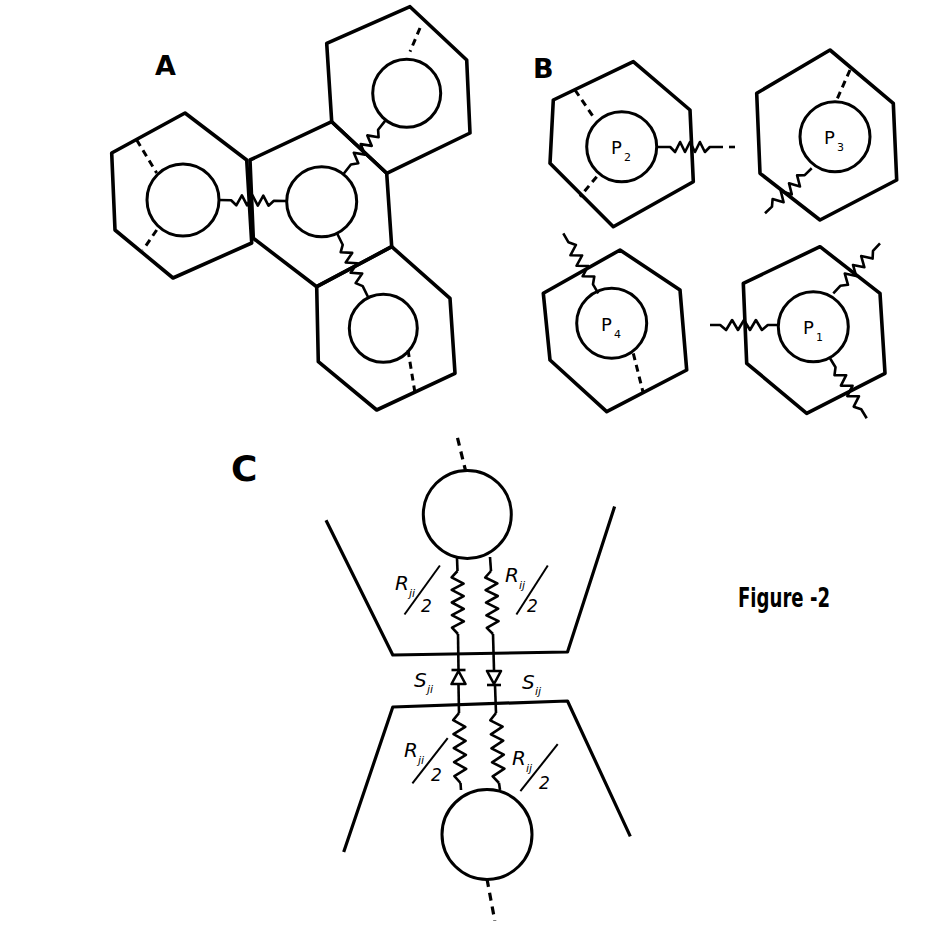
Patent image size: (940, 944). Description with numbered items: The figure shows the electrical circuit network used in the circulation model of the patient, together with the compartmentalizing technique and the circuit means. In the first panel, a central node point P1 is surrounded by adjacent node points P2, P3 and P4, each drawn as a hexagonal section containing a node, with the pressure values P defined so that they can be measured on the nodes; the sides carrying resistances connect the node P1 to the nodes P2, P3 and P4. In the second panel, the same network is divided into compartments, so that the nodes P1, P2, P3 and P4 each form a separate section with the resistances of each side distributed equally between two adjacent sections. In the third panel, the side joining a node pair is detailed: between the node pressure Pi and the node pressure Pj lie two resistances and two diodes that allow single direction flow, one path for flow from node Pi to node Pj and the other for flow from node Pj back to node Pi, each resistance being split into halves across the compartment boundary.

The pressure node point P1 is at (321, 204).
The pressure node point P2 is at (182, 195).
The pressure node point P3 is at (398, 90).
The pressure node point P4 is at (386, 328).
The pressure at node point i Pi is at (467, 498).
The pressure at node point j Pj is at (487, 854).